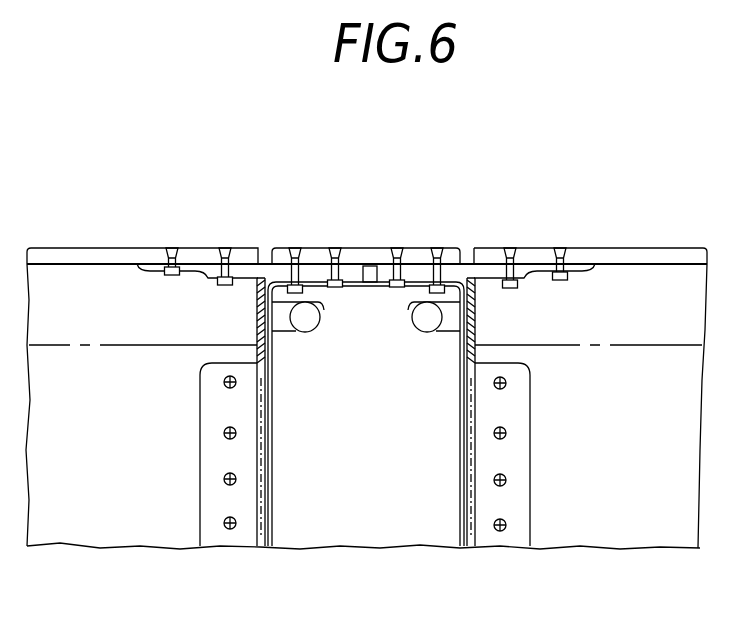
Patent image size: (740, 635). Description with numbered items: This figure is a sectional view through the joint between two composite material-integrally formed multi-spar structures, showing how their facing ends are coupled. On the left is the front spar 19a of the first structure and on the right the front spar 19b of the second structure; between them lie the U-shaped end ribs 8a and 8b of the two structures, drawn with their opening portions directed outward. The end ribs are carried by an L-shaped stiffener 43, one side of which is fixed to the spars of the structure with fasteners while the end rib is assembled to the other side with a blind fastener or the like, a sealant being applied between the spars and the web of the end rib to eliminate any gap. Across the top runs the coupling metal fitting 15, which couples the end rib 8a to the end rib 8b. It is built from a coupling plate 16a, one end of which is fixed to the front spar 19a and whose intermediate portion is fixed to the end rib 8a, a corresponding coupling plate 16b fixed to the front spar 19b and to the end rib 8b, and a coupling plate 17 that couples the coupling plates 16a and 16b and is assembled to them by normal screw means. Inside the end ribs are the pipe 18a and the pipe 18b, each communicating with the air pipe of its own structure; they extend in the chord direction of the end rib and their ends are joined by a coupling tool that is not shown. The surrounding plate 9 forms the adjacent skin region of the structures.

The floor plate 9 is at (130, 249).
The coupling metal fitting 15 is at (366, 257).
The coupling plate 17 is at (316, 255).
The coupling plate 16a is at (245, 265).
The coupling plate 16b is at (528, 268).
The front spar 19a is at (92, 277).
The front spar 19b is at (677, 293).
The end rib 8a is at (272, 490).
The end rib 8b is at (460, 490).
The pipe 18a is at (312, 332).
The pipe 18b is at (427, 332).
The L-shaped stiffener 43 is at (243, 532).